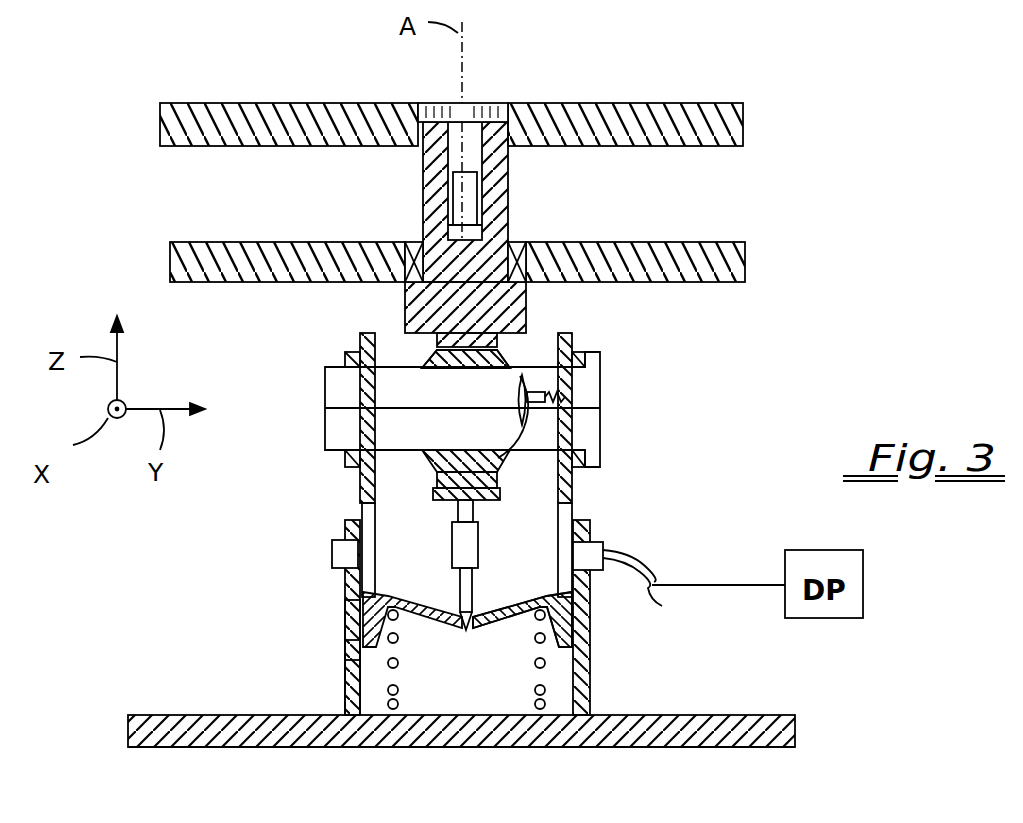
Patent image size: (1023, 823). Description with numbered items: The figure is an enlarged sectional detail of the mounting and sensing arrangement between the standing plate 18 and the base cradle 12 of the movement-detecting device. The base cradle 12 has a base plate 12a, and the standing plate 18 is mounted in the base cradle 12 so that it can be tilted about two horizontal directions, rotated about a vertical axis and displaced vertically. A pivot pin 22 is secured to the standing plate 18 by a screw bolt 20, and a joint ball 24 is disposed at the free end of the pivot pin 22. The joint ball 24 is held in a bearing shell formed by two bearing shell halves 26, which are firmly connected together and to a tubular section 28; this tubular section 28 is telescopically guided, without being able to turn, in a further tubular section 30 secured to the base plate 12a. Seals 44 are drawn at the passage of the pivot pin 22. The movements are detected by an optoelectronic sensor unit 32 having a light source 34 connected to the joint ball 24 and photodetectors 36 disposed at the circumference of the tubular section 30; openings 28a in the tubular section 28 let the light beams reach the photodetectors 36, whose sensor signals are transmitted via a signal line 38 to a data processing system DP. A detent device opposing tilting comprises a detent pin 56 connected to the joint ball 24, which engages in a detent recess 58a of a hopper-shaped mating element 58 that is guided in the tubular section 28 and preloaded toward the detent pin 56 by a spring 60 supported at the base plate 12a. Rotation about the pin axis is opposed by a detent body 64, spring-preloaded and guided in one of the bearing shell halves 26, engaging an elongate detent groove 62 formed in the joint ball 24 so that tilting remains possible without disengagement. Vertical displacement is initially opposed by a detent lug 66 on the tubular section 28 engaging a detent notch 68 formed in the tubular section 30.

The base cradle 12 is at (738, 713).
The base plate 12a is at (255, 733).
The standing plate 18 is at (743, 128).
The screw bolt 20 is at (466, 100).
The pivot pin 22 is at (508, 190).
The joint ball 24 is at (433, 355).
The bearing shell halves 26 is at (335, 428).
The tubular section 28 is at (575, 335).
The openings 28a is at (360, 518).
The tubular section 30 is at (590, 653).
The optoelectronic sensor unit 32 is at (637, 495).
The light source 34 is at (478, 540).
The photodetectors 36 is at (603, 548).
The signal line 38 is at (652, 598).
The seal 44 is at (411, 243).
The detent pin 56 is at (458, 590).
The mating element 58 is at (462, 630).
The detent recess 58a is at (477, 620).
The spring 60 is at (398, 663).
The detent groove 62 is at (508, 385).
The detent body 64 is at (548, 384).
The detent lug 66 is at (345, 648).
The detent notch 68 is at (345, 633).